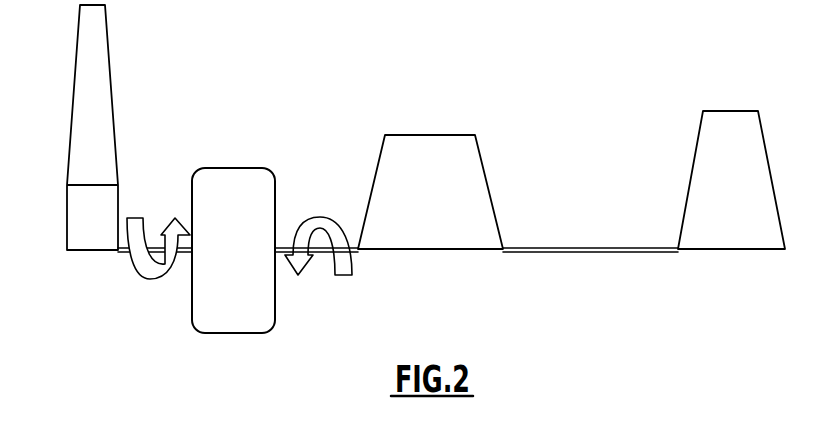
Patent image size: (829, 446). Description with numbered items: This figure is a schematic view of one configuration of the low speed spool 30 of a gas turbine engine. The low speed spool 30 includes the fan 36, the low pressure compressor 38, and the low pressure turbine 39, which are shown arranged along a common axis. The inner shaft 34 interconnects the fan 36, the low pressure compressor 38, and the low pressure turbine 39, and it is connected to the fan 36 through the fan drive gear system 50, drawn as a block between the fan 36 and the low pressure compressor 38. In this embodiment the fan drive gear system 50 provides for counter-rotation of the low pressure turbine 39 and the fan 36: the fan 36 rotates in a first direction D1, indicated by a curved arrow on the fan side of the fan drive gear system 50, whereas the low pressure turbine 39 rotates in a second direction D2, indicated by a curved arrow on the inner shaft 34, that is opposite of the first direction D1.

The low speed spool 30 is at (470, 66).
The inner shaft 34 is at (582, 252).
The fan 36 is at (97, 63).
The low pressure compressor 38 is at (449, 181).
The low pressure turbine 39 is at (749, 182).
The fan drive gear system 50 is at (249, 261).
The first direction D1 is at (171, 268).
The second direction D2 is at (320, 217).